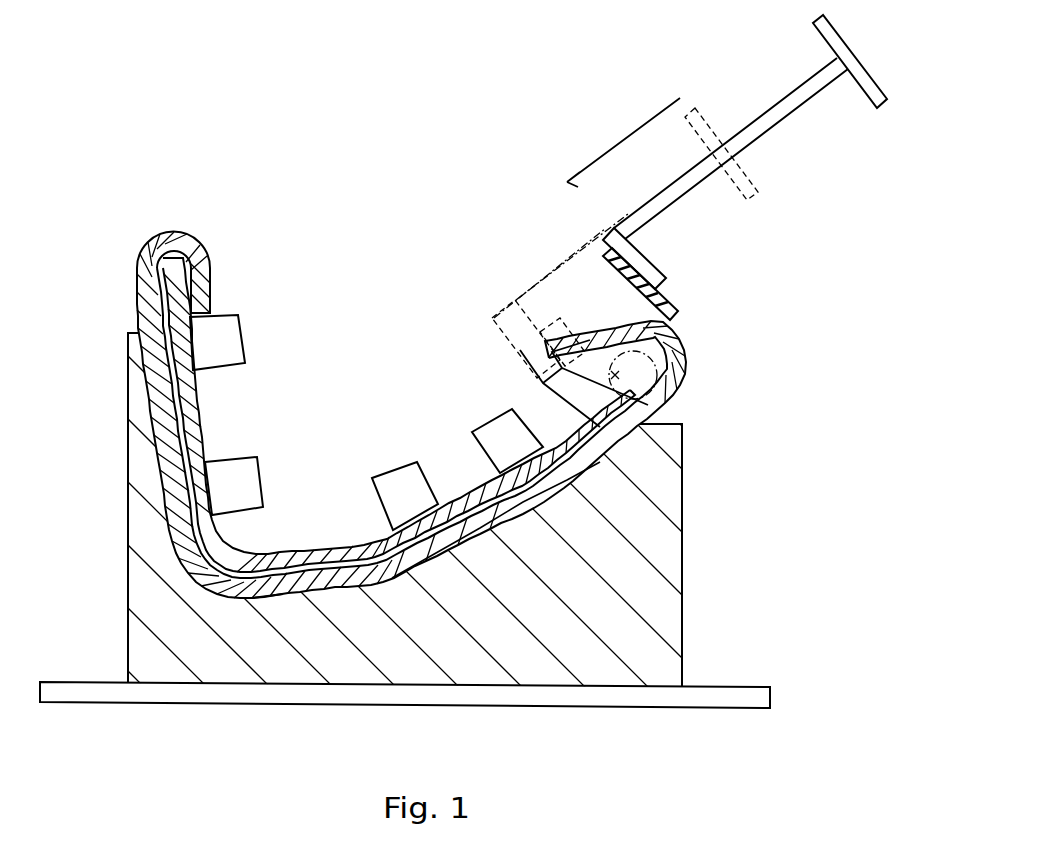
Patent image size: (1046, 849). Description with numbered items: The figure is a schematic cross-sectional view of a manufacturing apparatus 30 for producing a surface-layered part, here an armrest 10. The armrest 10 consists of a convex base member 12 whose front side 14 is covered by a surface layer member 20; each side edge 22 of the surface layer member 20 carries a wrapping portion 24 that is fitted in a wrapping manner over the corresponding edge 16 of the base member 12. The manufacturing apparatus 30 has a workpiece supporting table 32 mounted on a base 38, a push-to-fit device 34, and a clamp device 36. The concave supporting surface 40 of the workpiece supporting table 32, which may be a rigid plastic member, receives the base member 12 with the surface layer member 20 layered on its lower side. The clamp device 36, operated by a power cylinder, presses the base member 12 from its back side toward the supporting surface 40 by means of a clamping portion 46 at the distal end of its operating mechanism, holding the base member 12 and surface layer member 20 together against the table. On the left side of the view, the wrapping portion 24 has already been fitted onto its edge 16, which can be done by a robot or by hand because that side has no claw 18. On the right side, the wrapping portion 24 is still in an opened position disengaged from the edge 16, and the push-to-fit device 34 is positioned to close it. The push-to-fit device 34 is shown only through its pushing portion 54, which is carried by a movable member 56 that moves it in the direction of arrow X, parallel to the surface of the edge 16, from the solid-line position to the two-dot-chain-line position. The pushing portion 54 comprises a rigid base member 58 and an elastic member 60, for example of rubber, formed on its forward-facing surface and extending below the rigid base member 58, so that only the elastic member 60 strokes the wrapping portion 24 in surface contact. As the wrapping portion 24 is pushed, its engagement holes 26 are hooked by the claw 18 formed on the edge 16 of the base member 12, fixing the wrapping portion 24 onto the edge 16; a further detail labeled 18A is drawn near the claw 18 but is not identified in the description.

The armrest 10 is at (222, 412).
The base member 12 is at (477, 500).
The front side 14 is at (389, 563).
The edge 16 is at (172, 278).
The claw 18 is at (591, 243).
The tip of pressing tool 18A is at (515, 305).
The surface layer member 20 is at (437, 548).
The edge 22 is at (135, 298).
The wrapping portion 24 is at (210, 290).
The engagement holes 26 is at (615, 332).
The manufacturing apparatus 30 is at (222, 100).
The workpiece supporting table 32 is at (335, 660).
The push-to-fit device 34 is at (758, 78).
The clamp device 36 is at (502, 430).
The base 38 is at (226, 697).
The supporting surface 40 is at (284, 584).
The clamping portion 46 is at (366, 420).
The pushing portion 54 is at (691, 274).
The movable member 56 is at (790, 105).
The rigid base member 58 is at (648, 260).
The elastic member 60 is at (668, 318).